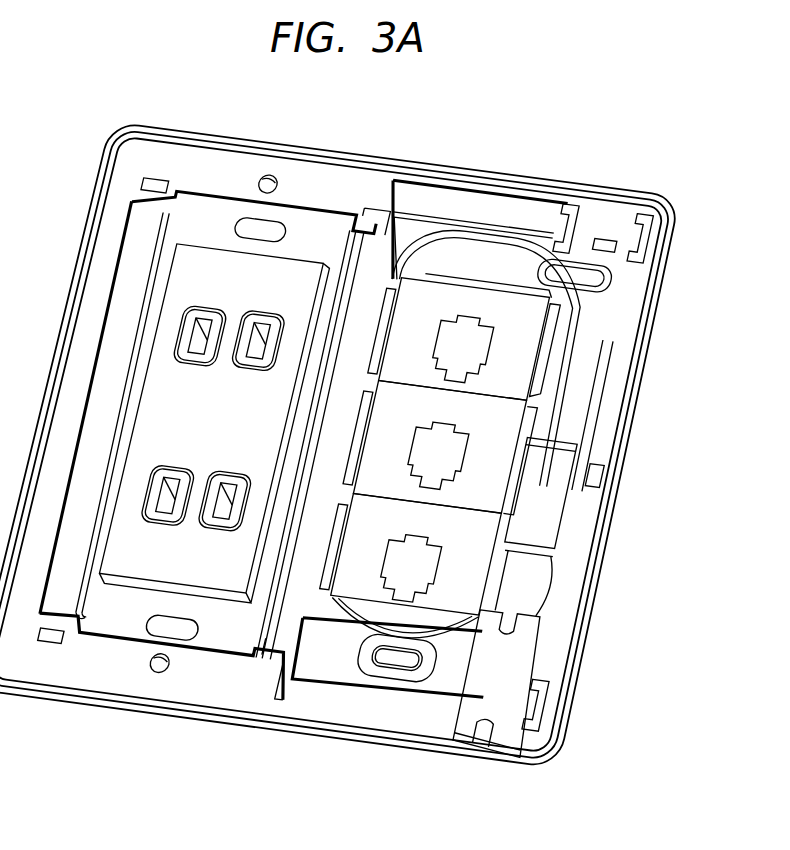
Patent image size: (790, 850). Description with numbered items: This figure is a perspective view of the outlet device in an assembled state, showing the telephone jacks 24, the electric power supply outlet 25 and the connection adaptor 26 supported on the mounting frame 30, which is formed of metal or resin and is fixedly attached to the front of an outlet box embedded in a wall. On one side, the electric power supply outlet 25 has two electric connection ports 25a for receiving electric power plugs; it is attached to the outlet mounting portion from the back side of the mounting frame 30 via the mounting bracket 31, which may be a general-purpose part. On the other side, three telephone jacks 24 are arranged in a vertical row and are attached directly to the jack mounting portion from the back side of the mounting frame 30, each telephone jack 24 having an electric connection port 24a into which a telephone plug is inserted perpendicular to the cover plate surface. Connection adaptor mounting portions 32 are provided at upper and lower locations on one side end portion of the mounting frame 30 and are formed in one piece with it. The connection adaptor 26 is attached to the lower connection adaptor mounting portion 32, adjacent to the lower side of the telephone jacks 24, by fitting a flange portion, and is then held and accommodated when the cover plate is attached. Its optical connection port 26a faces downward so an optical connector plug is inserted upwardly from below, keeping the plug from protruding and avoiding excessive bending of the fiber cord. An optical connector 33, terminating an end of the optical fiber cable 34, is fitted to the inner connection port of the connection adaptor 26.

The mounting frame 30 is at (393, 155).
The mounting bracket 31 is at (120, 630).
The connection adaptor mounting portion 32 is at (632, 208).
The optical connector 33 is at (547, 519).
The optical fiber cable 34 is at (568, 281).
The telephone jack 24 is at (507, 458).
The electric connection port 24a is at (456, 337).
The electric power supply outlet 25 is at (213, 381).
The electric connection port 25a is at (200, 366).
The connection adaptor 26 is at (538, 720).
The optical connection port 26a is at (498, 766).